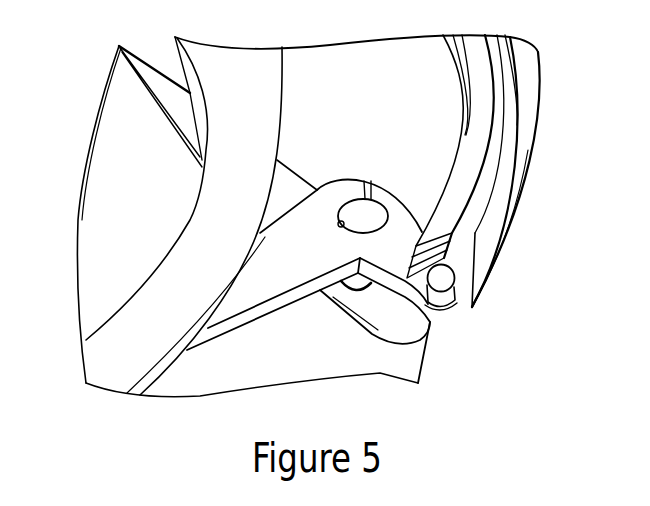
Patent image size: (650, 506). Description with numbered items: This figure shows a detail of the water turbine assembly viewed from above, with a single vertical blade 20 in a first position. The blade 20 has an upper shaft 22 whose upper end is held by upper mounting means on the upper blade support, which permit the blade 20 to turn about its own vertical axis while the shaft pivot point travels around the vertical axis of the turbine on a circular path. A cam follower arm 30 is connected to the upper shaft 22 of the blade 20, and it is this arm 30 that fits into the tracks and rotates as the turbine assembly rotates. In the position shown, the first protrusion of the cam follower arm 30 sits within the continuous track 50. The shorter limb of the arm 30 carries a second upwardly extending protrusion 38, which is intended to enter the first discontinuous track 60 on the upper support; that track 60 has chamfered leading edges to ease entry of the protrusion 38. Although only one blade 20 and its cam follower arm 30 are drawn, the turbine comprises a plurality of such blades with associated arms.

The vertical blade 20 is at (410, 368).
The upper end of vertical blade shaft 22 is at (345, 300).
The cam follower arm 30 is at (343, 193).
The second upwardly extending protrusion 38 is at (442, 286).
The continuous track 50 is at (130, 332).
The first discontinuous track 60 is at (528, 122).